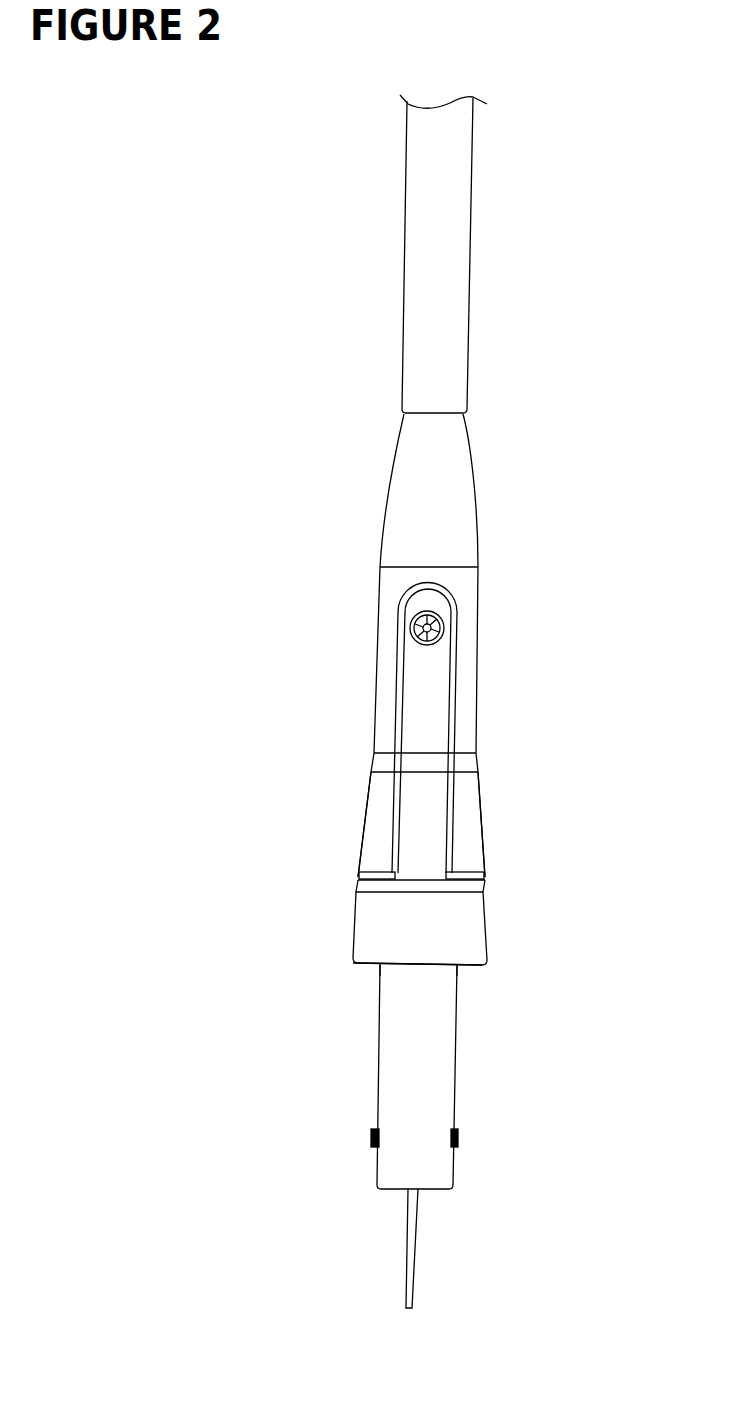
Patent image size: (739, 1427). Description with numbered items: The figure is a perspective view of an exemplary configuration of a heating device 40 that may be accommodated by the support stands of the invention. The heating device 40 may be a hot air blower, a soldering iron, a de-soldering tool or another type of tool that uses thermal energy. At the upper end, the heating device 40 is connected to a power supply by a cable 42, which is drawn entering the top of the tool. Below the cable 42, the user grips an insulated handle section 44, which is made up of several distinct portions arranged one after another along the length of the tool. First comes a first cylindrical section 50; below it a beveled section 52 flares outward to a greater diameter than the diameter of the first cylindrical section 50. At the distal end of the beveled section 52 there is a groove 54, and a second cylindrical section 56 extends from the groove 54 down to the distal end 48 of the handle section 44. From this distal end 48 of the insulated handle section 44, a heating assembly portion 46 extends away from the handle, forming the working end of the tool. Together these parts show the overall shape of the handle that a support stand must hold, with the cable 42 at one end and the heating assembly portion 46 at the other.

The heating device 40 is at (510, 553).
The cable 42 is at (470, 306).
The insulated handle section 44 is at (465, 677).
The heating assembly portion 46 is at (458, 1048).
The distal end 48 is at (487, 972).
The first cylindrical section 50 is at (481, 721).
The beveled section 52 is at (483, 825).
The groove 54 is at (487, 888).
The second cylindrical section 56 is at (485, 928).